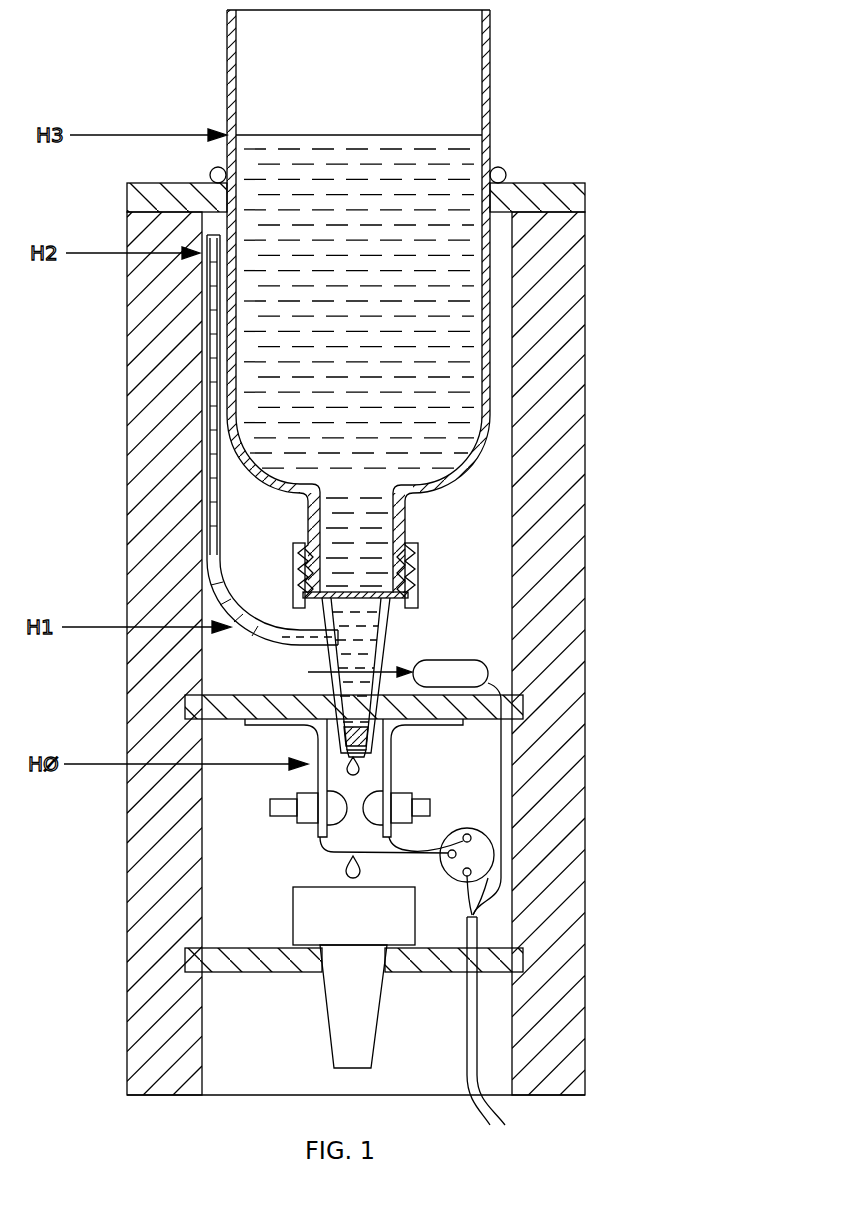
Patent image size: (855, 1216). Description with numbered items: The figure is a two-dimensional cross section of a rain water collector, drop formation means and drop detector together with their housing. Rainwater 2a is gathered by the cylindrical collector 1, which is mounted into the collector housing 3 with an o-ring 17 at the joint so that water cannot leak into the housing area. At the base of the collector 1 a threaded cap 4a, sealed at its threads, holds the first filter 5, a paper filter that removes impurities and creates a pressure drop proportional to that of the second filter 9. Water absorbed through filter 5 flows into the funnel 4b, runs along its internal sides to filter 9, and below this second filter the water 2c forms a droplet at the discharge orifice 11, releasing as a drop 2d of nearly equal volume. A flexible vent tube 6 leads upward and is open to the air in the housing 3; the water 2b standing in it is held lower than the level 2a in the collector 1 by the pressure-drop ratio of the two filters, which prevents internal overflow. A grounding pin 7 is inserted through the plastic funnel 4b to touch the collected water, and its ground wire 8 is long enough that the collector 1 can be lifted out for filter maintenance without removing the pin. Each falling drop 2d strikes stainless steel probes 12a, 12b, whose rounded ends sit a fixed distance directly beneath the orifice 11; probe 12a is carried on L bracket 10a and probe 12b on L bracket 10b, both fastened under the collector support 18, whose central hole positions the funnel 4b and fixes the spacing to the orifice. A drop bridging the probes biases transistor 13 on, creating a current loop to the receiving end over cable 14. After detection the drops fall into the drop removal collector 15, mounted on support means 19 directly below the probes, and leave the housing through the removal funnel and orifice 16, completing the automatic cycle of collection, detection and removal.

The collector 1 is at (492, 40).
The rainwater 2a is at (455, 168).
The water in vent tube 2b is at (213, 300).
The water 2c is at (363, 640).
The droplet 2d is at (347, 767).
The collector housing 3 is at (585, 297).
The threaded cap 4a is at (416, 592).
The funnel 4b is at (393, 632).
The filter 5 is at (347, 593).
The vent tube 6 is at (218, 575).
The grounding pin 7 is at (308, 672).
The ground wire 8 is at (457, 661).
The filter 9 is at (354, 727).
The L bracket 10a is at (268, 727).
The L bracket 10b is at (443, 727).
The discharge orifice 11 is at (362, 757).
The probe 12a is at (290, 817).
The probe 12b is at (432, 806).
The transistor 13 is at (440, 867).
The cable 14 is at (467, 1023).
The drop removal collector 15 is at (292, 927).
The removal funnel and orifice 16 is at (352, 1070).
The o-ring 17 is at (504, 170).
The collector support 18 is at (268, 695).
The support means 19 is at (263, 973).